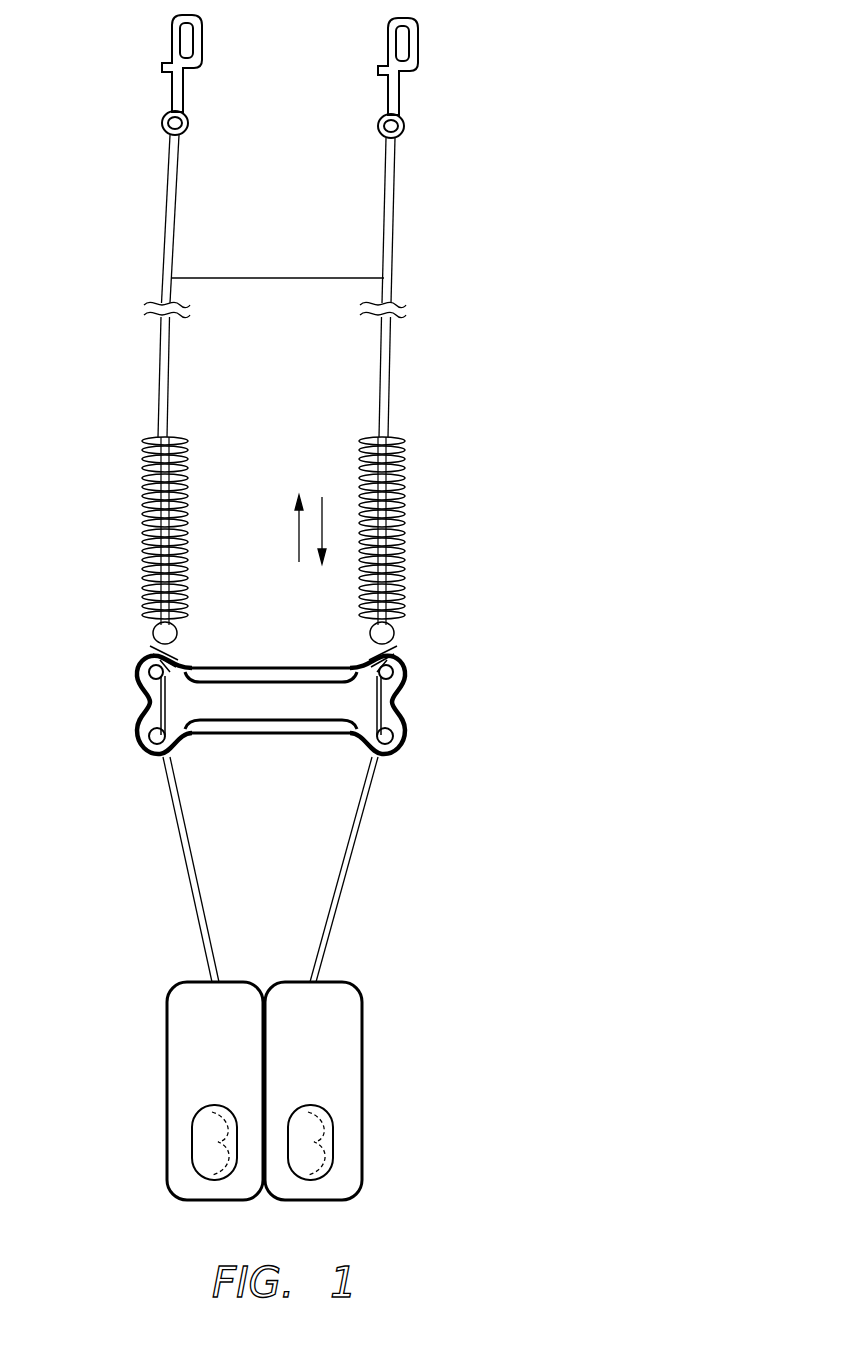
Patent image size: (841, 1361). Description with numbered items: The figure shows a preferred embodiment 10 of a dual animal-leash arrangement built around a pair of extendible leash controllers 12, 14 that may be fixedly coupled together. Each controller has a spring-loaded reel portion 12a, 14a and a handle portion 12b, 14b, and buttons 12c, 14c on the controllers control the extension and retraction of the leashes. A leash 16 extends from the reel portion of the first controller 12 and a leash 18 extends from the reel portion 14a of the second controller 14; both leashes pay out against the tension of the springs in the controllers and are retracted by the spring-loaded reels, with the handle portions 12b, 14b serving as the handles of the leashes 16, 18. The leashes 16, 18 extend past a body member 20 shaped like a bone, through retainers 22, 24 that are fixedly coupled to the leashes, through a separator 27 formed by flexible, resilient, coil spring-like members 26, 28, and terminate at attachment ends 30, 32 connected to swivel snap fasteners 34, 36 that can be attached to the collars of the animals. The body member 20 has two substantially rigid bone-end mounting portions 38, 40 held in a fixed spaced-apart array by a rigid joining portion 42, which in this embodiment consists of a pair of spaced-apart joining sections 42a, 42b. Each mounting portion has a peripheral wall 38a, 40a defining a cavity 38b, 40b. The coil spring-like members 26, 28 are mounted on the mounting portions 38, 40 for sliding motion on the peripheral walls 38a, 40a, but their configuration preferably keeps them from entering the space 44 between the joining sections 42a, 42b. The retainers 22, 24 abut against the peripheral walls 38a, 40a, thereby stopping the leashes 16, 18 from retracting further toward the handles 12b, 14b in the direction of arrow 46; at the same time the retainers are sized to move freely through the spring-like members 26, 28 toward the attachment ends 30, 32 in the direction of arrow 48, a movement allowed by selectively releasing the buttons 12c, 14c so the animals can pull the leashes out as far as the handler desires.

The embodiment 10 is at (466, 803).
The extendible leash controller 12 is at (362, 1060).
The spring-loaded reel portion 12a is at (362, 1090).
The handle portion 12b is at (360, 1168).
The button 12c is at (332, 1143).
The extendible leash controller 14 is at (165, 1088).
The spring-loaded reel portion 14a is at (165, 1028).
The handle portion 14b is at (165, 1170).
The button 14c is at (190, 1143).
The leash 16 is at (352, 870).
The leash 18 is at (198, 866).
The body member 20 is at (405, 727).
The retainer 22 is at (395, 633).
The retainer 24 is at (147, 632).
The flexible resilient coil spring-like member 26 is at (405, 500).
The separator 27 is at (190, 462).
The flexible resilient coil spring-like member 28 is at (142, 500).
The attachment end 30 is at (394, 222).
The attachment end 32 is at (168, 200).
The swivel snap fastener 34 is at (416, 46).
The swivel snap fastener 36 is at (172, 44).
The mounting portion 38 is at (405, 665).
The peripheral wall 38a is at (390, 758).
The cavity 38b is at (353, 703).
The mounting portion 40 is at (137, 730).
The peripheral wall 40a is at (150, 755).
The cavity 40b is at (178, 690).
The rigid joining portion 42 is at (283, 668).
The joining section 42a is at (240, 668).
The joining section 42b is at (322, 735).
The space 44 is at (290, 714).
The arrow 46 is at (325, 530).
The arrow 48 is at (298, 530).